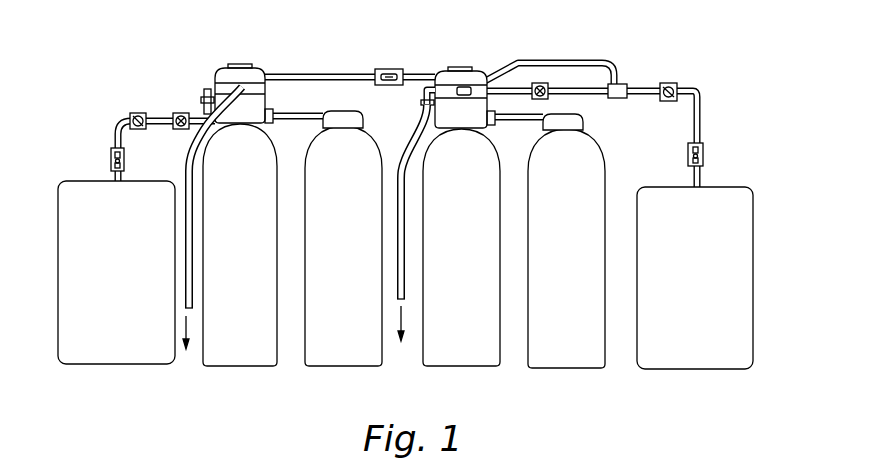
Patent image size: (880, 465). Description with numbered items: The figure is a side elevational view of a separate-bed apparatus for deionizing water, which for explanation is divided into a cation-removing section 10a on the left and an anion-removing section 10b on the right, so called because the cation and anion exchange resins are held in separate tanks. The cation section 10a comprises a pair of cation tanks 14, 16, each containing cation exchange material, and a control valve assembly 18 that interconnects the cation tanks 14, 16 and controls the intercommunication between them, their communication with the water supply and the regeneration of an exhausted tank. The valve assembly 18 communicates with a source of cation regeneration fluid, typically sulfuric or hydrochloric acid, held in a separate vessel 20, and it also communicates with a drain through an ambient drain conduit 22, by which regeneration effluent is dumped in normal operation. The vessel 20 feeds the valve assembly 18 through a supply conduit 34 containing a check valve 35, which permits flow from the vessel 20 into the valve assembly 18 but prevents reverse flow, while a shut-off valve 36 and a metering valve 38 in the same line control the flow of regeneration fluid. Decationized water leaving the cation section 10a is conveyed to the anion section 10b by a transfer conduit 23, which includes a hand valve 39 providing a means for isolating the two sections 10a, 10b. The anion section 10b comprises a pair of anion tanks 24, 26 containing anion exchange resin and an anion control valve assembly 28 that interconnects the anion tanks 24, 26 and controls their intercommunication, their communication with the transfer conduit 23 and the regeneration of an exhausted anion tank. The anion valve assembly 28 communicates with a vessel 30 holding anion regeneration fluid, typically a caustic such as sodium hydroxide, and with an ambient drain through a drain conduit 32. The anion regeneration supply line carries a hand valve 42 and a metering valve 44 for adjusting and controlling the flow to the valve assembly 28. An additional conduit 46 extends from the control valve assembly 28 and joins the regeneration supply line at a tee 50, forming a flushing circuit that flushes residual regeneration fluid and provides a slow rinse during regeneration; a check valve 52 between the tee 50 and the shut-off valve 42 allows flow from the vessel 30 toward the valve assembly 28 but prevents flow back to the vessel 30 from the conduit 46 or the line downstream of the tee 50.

The cation-removing section 10a is at (171, 47).
The anion-removing section 10b is at (657, 48).
The cation tank 14 is at (254, 302).
The cation tank 16 is at (356, 302).
The control valve assembly 18 is at (248, 63).
The vessel 20 is at (124, 302).
The ambient drain conduit 22 is at (190, 250).
The transfer conduit 23 is at (330, 72).
The anion tank 24 is at (474, 302).
The anion tank 26 is at (581, 302).
The anion control valve assembly 28 is at (462, 66).
The vessel 30 is at (708, 302).
The drain conduit 32 is at (404, 243).
The supply conduit 34 is at (157, 115).
The check valve 35 is at (135, 111).
The shut-off valve 36 is at (110, 150).
The metering valve 38 is at (180, 111).
The hand valve 39 is at (390, 67).
The hand valve 42 is at (703, 148).
The metering valve 44 is at (548, 84).
The conduit 46 is at (590, 61).
The tee 50 is at (620, 98).
The check valve 52 is at (674, 83).